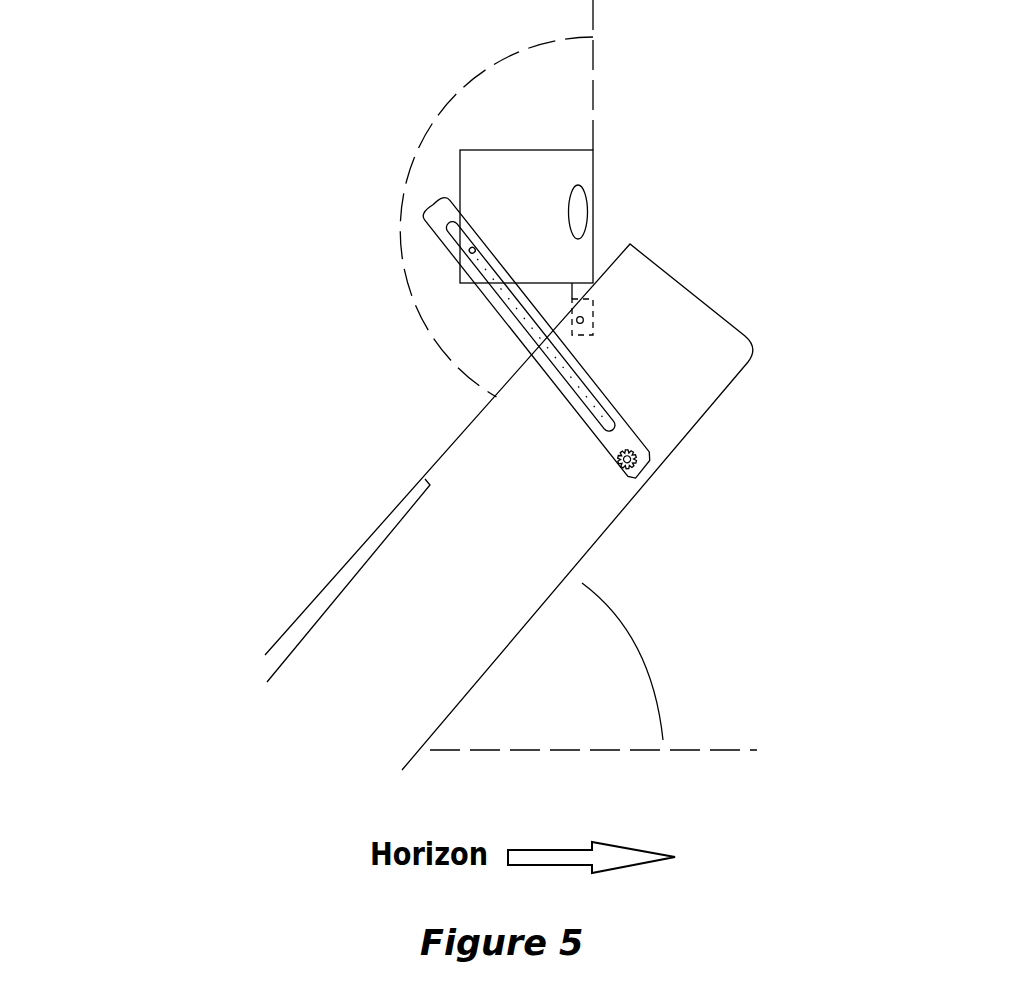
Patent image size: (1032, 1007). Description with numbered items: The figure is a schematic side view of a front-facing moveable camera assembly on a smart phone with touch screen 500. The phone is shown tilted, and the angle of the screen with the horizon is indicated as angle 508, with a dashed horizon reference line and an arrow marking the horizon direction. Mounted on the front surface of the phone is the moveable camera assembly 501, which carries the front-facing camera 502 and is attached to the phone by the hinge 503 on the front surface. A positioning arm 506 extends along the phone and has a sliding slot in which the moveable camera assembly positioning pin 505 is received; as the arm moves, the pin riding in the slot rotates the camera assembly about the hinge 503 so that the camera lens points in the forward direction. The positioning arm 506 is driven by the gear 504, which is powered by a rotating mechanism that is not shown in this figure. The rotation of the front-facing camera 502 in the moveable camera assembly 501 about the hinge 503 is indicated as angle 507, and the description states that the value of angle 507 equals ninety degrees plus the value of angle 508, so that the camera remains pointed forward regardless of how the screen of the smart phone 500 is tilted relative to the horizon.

The smart phone with touch screen 500 is at (338, 557).
The moveable camera assembly 501 is at (505, 177).
The front-facing camera 502 is at (605, 205).
The hinge 503 is at (605, 320).
The gear 504 is at (643, 488).
The moveable camera assembly positioning pin 505 is at (445, 248).
The positioning arm 506 is at (602, 392).
The angle of rotation of the front-facing camera about the hinge 507 is at (295, 302).
The angle of the screen with the horizon 508 is at (675, 657).